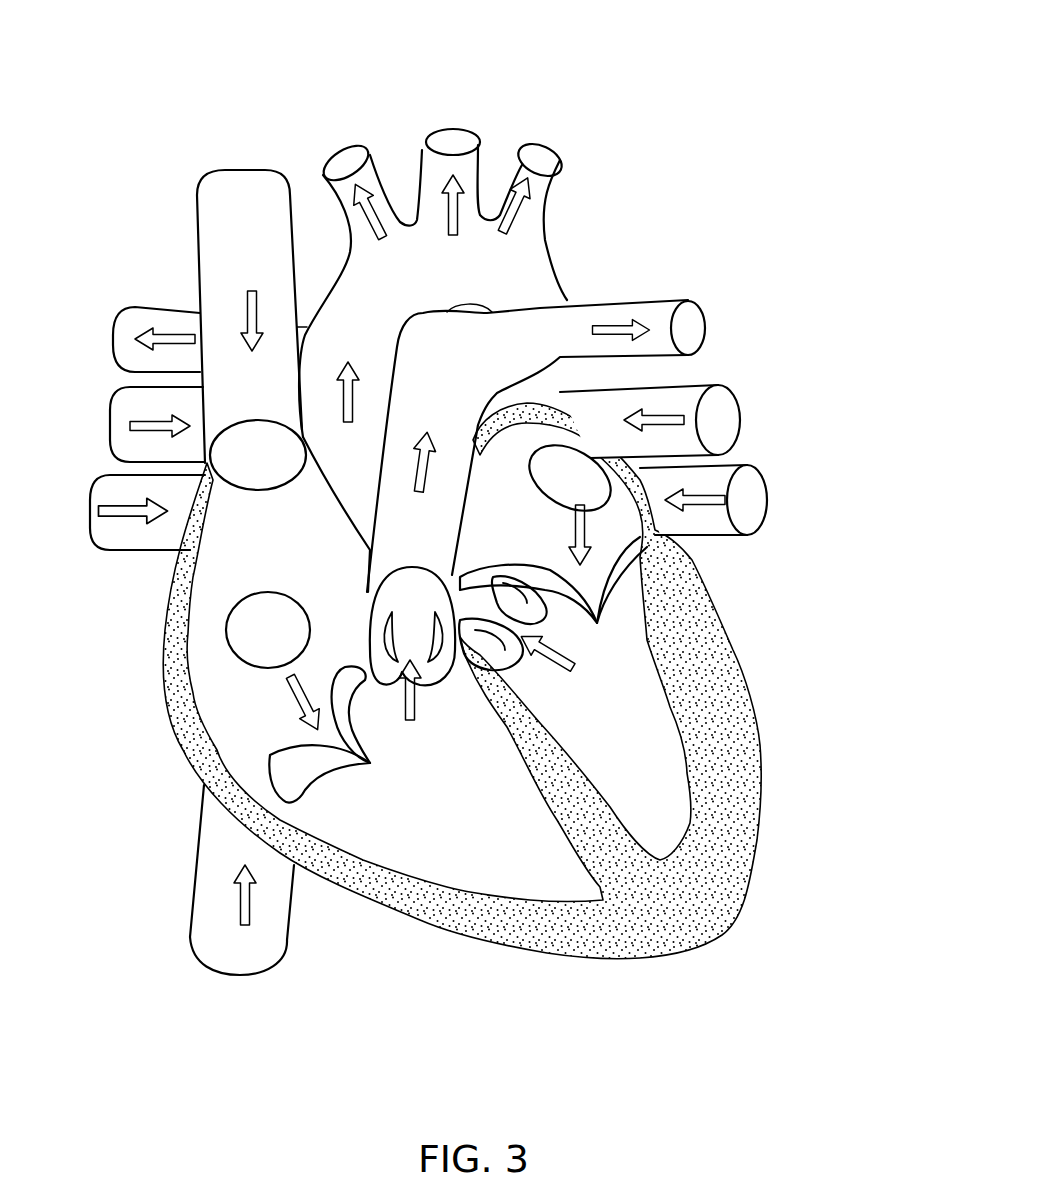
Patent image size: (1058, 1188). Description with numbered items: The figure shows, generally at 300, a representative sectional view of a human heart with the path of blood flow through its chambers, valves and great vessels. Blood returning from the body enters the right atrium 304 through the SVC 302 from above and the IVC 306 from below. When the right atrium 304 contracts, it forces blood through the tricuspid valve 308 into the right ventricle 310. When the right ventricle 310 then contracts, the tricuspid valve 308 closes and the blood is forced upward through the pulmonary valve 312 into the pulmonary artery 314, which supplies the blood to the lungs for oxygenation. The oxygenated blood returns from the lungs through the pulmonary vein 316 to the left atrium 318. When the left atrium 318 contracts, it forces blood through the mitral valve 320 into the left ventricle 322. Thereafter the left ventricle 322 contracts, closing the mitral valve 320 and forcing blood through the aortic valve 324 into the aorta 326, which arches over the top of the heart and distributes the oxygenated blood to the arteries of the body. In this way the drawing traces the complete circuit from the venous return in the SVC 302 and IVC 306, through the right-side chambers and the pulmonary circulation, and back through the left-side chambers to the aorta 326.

The sectional view of a human heart 300 is at (843, 183).
The SVC 302 is at (237, 168).
The right atrium 304 is at (258, 578).
The IVC 306 is at (237, 977).
The tricuspid valve 308 is at (345, 747).
The right ventricle 310 is at (415, 838).
The pulmonary valve 312 is at (410, 643).
The pulmonary artery 314 is at (108, 339).
The pulmonary vein 316 is at (108, 421).
The left atrium 318 is at (592, 493).
The mitral valve 320 is at (587, 587).
The left ventricle 322 is at (598, 762).
The aortic valve 324 is at (503, 617).
The aorta 326 is at (437, 220).